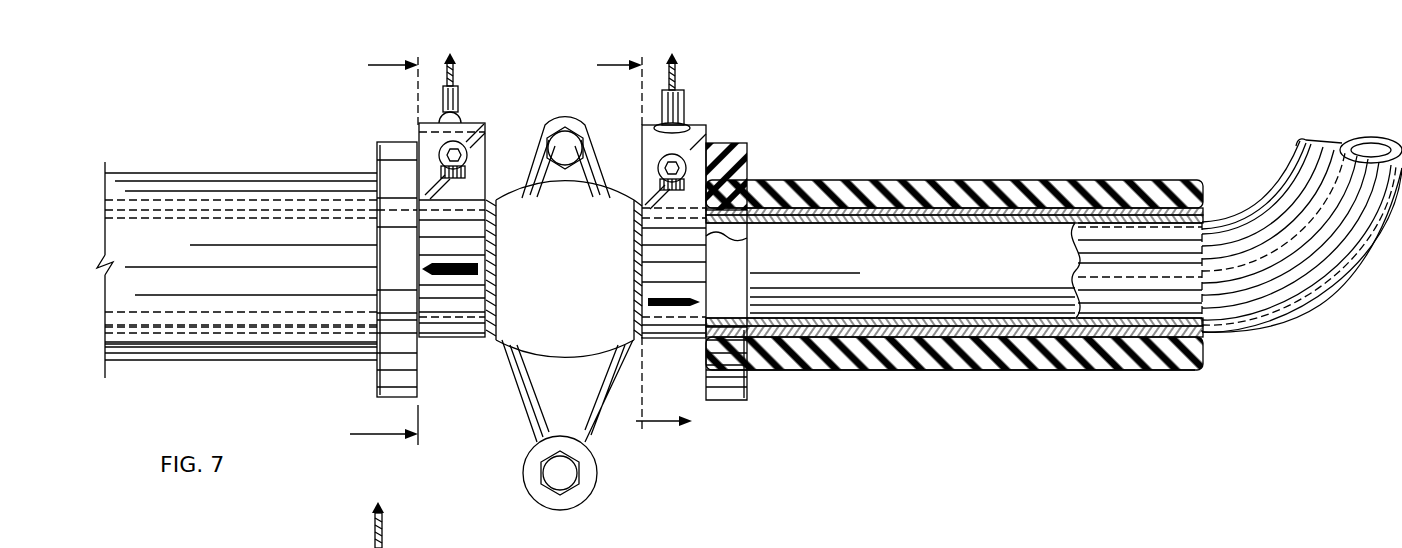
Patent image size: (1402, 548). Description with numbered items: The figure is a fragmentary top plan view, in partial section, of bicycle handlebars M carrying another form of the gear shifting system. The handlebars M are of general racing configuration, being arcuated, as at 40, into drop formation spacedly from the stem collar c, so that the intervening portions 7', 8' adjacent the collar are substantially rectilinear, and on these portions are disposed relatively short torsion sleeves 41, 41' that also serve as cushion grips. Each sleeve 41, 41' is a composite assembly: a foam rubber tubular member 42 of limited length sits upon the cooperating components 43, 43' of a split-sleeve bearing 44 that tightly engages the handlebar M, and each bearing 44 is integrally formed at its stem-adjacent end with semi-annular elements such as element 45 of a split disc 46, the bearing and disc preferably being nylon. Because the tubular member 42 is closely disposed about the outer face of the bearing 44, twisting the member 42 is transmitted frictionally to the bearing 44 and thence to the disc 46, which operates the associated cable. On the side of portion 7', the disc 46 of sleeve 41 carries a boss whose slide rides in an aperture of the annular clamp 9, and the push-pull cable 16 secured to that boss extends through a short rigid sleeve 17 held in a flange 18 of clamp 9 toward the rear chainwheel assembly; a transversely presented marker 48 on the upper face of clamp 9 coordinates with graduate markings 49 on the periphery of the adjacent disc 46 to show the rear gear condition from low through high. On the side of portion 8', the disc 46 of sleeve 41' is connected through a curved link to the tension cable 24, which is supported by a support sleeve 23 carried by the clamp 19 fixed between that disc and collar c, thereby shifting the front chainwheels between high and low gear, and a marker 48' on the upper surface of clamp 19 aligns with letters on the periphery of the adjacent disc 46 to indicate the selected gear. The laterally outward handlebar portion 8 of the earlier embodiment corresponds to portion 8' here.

The handlebar portion 7' is at (1261, 371).
The handlebar portion 8 is at (899, 246).
The handlebar portion 8' is at (232, 300).
The annular clamp 9 is at (696, 152).
The push-pull cable 16 is at (676, 82).
The rigid sleeve 17 is at (688, 98).
The flange 18 is at (697, 128).
The clamp 19 is at (488, 120).
The support sleeve 23 is at (468, 114).
The tension cable 24 is at (460, 64).
The arcuated portion 40 is at (1232, 213).
The torsion sleeve 41 is at (975, 420).
The torsion sleeve 41' is at (241, 406).
The tubular member 42 is at (200, 362).
The bearing component 43 is at (954, 224).
The bearing component 43' is at (241, 387).
The split-sleeve bearing 44 is at (978, 181).
The semi-annular disc element 45 is at (372, 157).
The disc 46 is at (372, 167).
The marker 48 is at (710, 416).
The marker 48' is at (467, 355).
The graduate markings 49 is at (762, 343).
The handlebars M is at (1300, 317).
The stem collar c is at (568, 337).